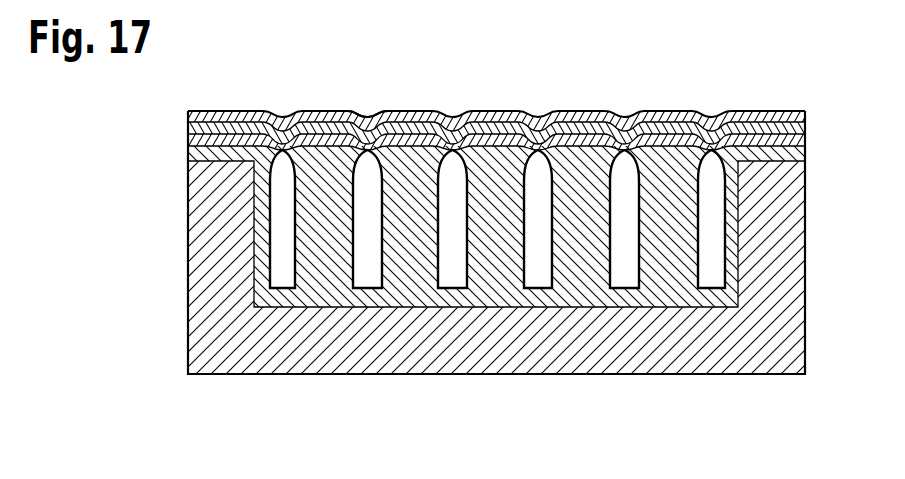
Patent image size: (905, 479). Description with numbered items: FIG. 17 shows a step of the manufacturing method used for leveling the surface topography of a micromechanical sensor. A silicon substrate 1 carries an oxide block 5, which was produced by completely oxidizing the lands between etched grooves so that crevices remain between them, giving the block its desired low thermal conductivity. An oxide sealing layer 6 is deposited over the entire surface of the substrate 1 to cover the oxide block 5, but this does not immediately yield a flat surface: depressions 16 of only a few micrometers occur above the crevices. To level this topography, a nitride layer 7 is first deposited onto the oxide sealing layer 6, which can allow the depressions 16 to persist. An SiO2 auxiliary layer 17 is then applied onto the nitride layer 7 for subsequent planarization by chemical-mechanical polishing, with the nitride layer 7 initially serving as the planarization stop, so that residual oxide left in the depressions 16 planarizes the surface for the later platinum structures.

The silicon substrate 1 is at (775, 308).
The oxide block 5 is at (581, 276).
The oxide sealing layer 6 is at (192, 138).
The nitride layer 7 is at (192, 121).
The depressions 16 is at (369, 114).
The SiO2 auxiliary layer 17 is at (575, 111).